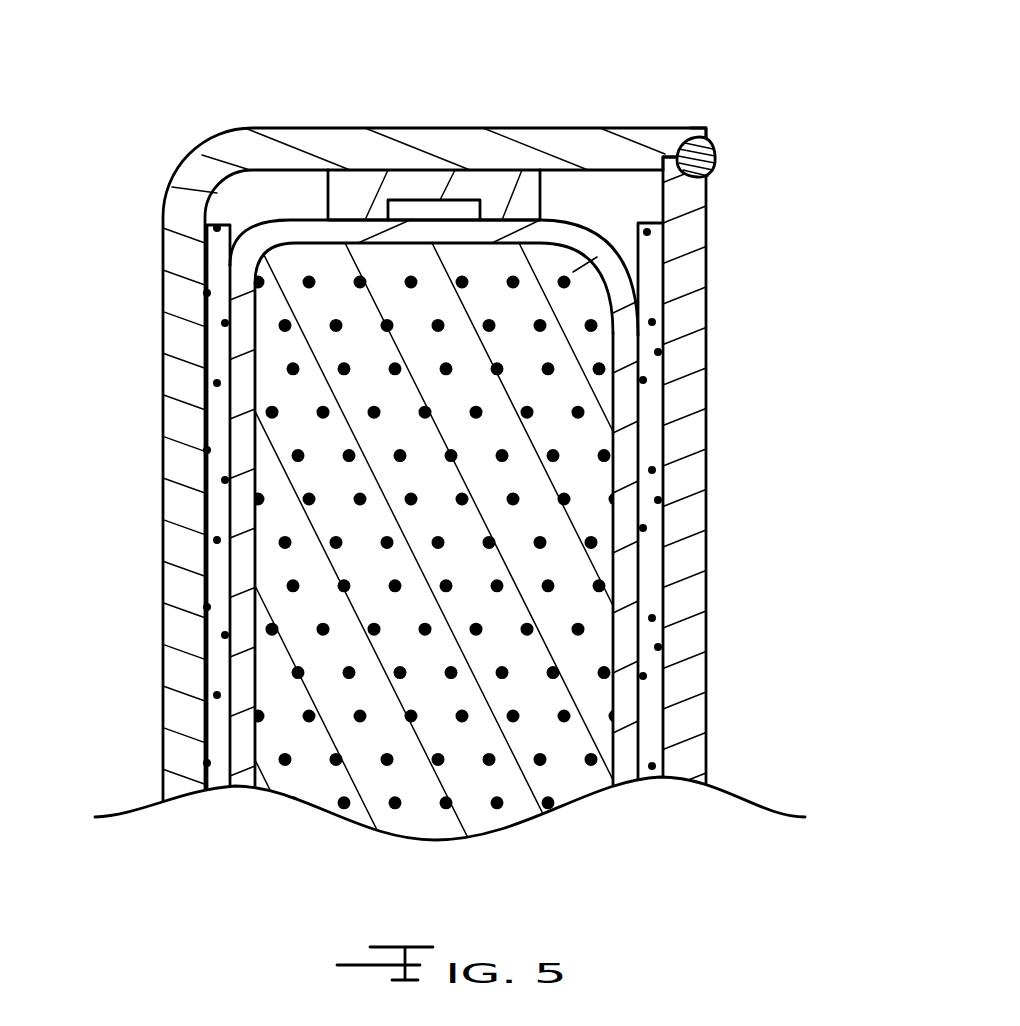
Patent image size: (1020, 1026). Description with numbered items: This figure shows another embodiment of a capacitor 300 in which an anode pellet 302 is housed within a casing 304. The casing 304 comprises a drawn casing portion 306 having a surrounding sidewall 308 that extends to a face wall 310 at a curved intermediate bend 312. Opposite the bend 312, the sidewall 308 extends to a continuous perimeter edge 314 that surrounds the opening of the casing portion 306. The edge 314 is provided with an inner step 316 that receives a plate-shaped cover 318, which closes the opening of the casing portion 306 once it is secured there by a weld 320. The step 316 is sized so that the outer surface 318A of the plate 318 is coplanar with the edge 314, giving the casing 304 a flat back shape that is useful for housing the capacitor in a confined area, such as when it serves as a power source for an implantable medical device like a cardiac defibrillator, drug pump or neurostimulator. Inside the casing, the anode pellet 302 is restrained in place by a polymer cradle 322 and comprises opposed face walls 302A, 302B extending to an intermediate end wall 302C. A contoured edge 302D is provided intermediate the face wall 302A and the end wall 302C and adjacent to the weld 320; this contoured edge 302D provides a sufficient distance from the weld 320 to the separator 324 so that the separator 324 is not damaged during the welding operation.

The capacitor 300 is at (773, 143).
The anode pellet 302 is at (568, 607).
The face wall 302A is at (615, 516).
The face wall 302B is at (252, 567).
The intermediate end wall 302C is at (425, 243).
The contoured edge 302D is at (590, 262).
The casing 304 is at (167, 124).
The drawn casing portion 306 is at (163, 280).
The surrounding sidewall 308 is at (465, 128).
The face wall 310 is at (183, 534).
The curved intermediate bend 312 is at (177, 186).
The continuous perimeter edge 314 is at (707, 135).
The inner step 316 is at (668, 157).
The plate-shaped cover 318 is at (682, 392).
The outer surface 318A is at (703, 310).
The weld 320 is at (715, 162).
The polymer cradle 322 is at (348, 185).
The separator 324 is at (625, 633).